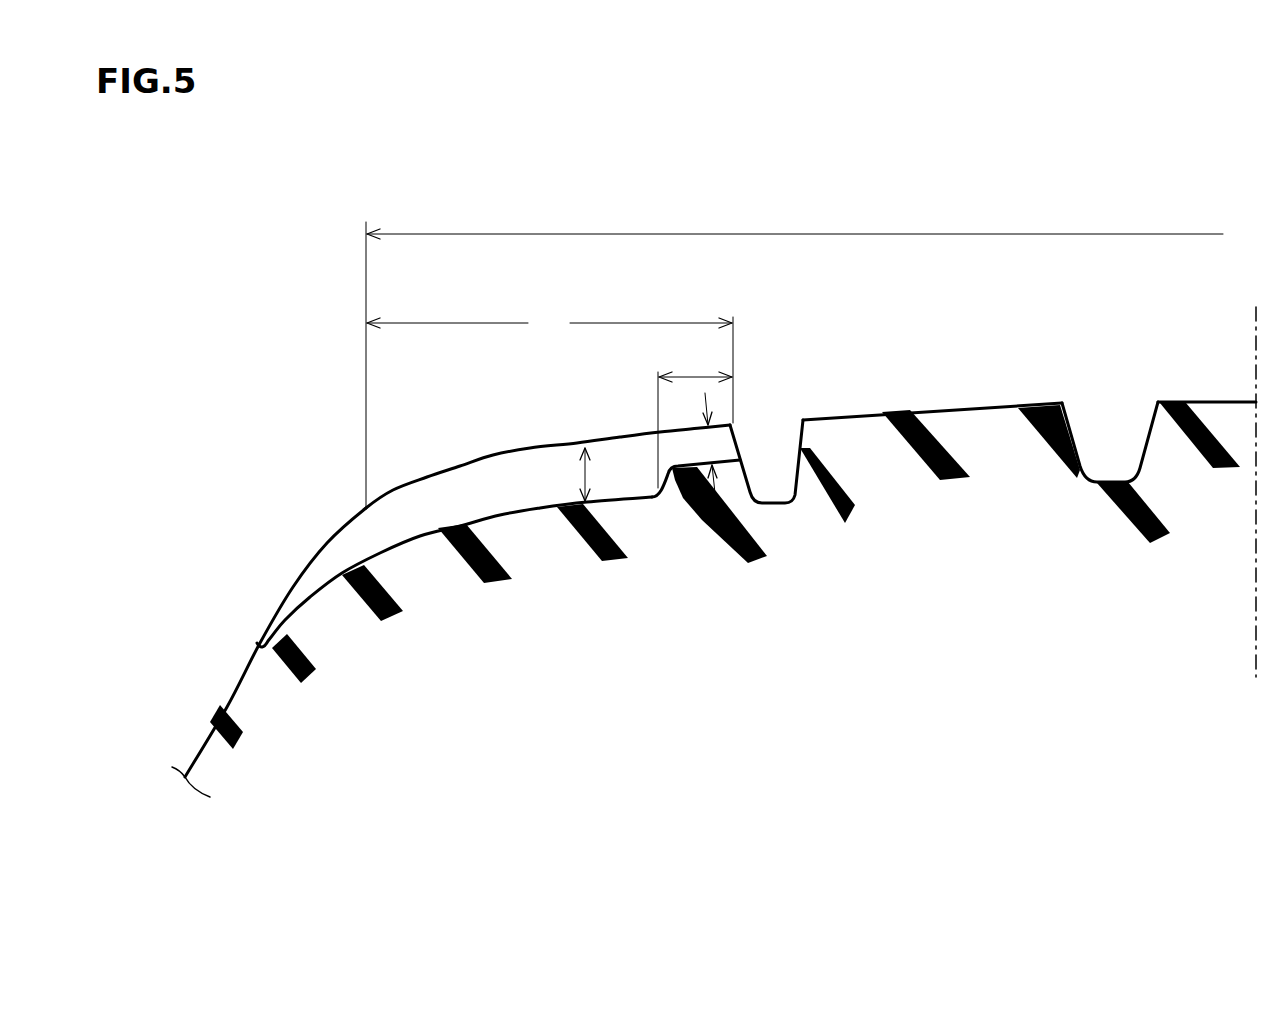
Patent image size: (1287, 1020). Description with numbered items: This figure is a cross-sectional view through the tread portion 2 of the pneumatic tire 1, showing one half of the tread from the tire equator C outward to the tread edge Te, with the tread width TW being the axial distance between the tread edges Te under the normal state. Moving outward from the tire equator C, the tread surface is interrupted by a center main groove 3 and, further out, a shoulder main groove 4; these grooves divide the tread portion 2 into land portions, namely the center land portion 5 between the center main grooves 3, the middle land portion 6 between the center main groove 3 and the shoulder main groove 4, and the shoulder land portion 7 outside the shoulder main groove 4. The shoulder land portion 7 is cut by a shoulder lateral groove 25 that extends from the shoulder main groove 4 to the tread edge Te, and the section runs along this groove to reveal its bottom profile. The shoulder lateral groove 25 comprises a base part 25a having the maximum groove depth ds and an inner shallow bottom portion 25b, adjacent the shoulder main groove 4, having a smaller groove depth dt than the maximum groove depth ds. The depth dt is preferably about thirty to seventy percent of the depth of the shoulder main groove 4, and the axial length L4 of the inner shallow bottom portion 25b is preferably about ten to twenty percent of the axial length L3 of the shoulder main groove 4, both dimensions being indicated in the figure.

The pneumatic tire 1 is at (260, 515).
The tread portion 2 is at (624, 315).
The center main groove 3 is at (1112, 428).
The shoulder main groove 4 is at (767, 452).
The center land portion 5 is at (1223, 402).
The middle land portion 6 is at (952, 410).
The shoulder land portion 7 is at (527, 448).
The shoulder lateral groove 25 is at (512, 579).
The base part 25a is at (533, 513).
The inner shallow bottom portion 25b is at (693, 460).
The tread edge Te is at (362, 508).
The tread width TW is at (823, 235).
The tire equator C is at (1256, 480).
The length of the shoulder main groove L3 is at (632, 367).
The length of the inner shallow bottom portion L4 is at (695, 416).
The maximum groove depth ds is at (602, 474).
The groove depth of the inner shallow bottom portion dt is at (710, 450).